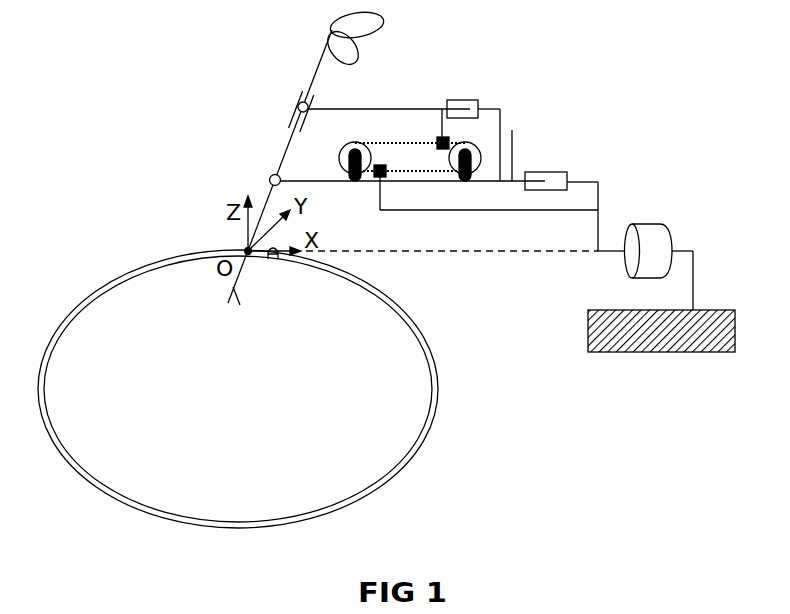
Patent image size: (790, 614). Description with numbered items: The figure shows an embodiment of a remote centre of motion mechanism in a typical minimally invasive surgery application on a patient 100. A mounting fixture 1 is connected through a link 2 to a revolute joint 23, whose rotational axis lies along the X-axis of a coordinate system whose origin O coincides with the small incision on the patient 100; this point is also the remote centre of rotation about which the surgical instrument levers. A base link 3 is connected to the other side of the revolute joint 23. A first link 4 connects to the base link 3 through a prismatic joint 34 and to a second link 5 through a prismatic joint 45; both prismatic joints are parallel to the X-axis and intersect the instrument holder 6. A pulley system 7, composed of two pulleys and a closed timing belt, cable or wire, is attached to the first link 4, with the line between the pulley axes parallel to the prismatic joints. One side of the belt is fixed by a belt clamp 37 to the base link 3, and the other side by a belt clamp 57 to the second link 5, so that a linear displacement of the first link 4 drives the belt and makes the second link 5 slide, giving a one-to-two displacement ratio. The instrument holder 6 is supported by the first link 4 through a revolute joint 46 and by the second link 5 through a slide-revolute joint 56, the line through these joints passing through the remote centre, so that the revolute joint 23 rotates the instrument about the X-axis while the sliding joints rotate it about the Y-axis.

The mounting fixture 1 is at (588, 335).
The link 2 is at (693, 251).
The revolute joint 23 is at (647, 224).
The base link 3 is at (474, 211).
The prismatic joint 34 is at (553, 172).
The first link 4 is at (512, 140).
The prismatic joint 45 is at (463, 100).
The second link 5 is at (350, 108).
The slide-revolute joint 56 is at (298, 107).
The revolute joint 46 is at (269, 180).
The instrument holder 6 is at (313, 72).
The pulley system 7 is at (339, 160).
The belt clamp 37 is at (375, 178).
The belt clamp 57 is at (440, 138).
The patient 100 is at (250, 431).